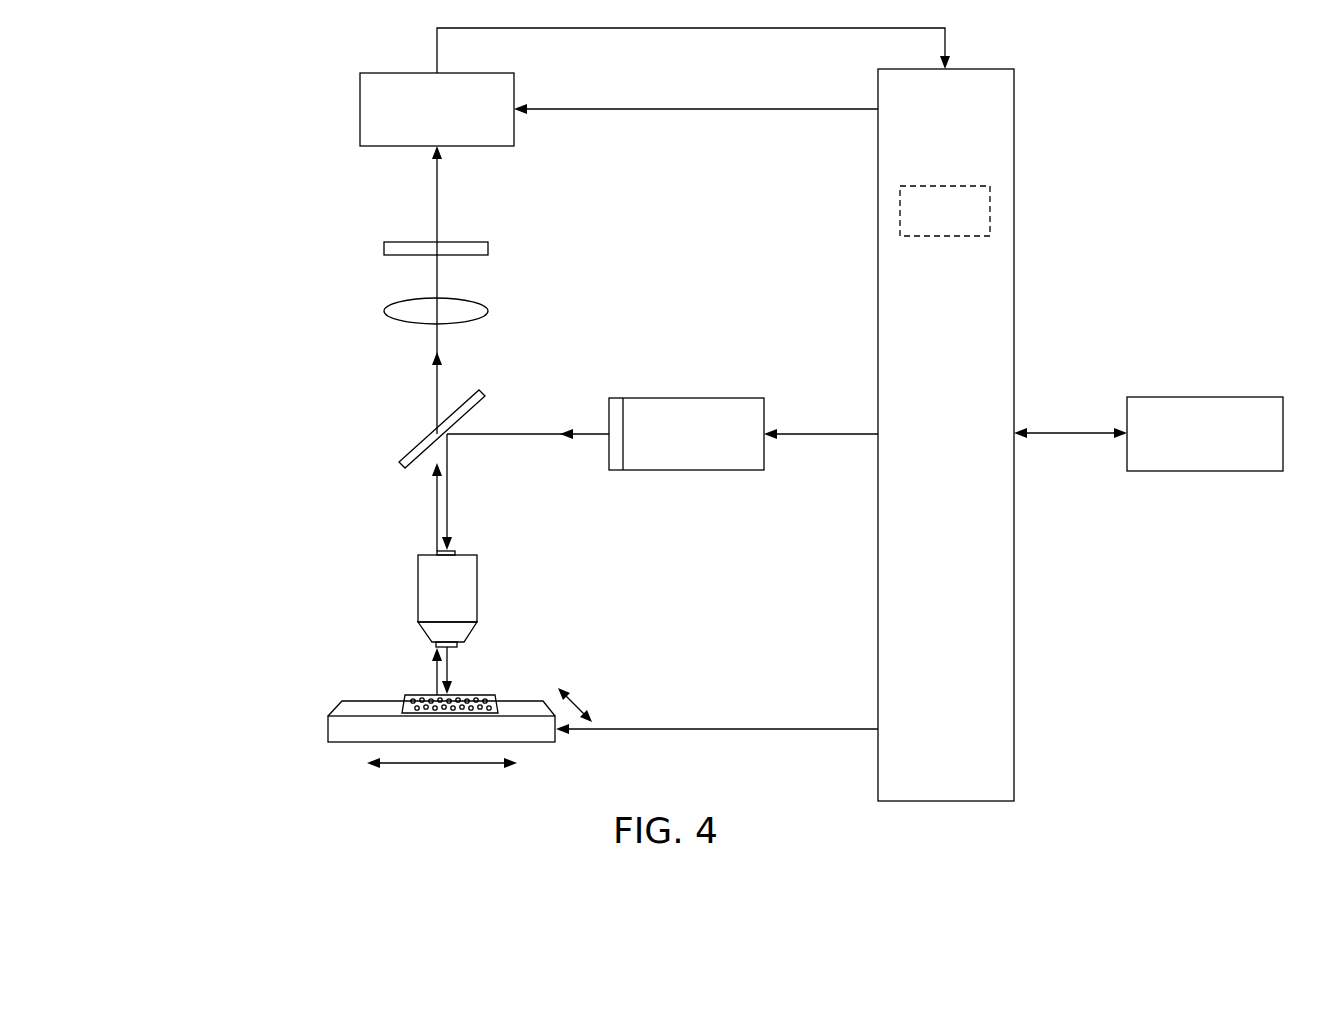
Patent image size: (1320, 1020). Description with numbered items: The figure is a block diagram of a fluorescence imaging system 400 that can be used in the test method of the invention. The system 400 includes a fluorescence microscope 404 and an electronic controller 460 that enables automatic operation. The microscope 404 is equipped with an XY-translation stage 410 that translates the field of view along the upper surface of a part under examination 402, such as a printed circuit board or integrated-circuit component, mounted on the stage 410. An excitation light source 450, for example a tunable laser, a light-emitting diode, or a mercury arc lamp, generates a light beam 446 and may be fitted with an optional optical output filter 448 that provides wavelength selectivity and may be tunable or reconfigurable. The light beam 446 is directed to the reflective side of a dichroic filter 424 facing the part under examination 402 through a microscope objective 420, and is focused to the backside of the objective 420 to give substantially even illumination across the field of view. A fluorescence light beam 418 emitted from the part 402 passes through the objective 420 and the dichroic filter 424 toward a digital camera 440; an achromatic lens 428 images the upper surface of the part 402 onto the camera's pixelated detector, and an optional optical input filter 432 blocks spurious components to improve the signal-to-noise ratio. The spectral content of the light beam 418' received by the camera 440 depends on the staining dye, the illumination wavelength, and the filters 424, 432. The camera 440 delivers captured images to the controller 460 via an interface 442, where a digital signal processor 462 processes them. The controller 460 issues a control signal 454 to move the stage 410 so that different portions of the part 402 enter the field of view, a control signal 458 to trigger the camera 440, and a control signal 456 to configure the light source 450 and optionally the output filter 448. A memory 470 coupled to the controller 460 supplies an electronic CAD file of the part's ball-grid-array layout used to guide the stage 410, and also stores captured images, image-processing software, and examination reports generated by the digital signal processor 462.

The fluorescence imaging system 400 is at (200, 106).
The part under examination 402 is at (501, 670).
The fluorescence microscope 404 is at (310, 340).
The XY-translation stage 410 is at (328, 730).
The fluorescence light beam 418 is at (406, 564).
The light beam received by camera 418' is at (416, 290).
The microscope objective 420 is at (418, 590).
The dichroic filter 424 is at (401, 460).
The achromatic lens 428 is at (385, 311).
The optical input filter 432 is at (384, 247).
The digital camera 440 is at (360, 110).
The interface 442 is at (690, 30).
The light beam 446 is at (590, 437).
The optical output filter 448 is at (618, 398).
The excitation light source 450 is at (687, 470).
The control signal 454 is at (722, 731).
The control signal 456 is at (820, 437).
The control signal 458 is at (695, 110).
The electronic controller 460 is at (878, 265).
The digital signal processor 462 is at (943, 236).
The memory 470 is at (1204, 471).